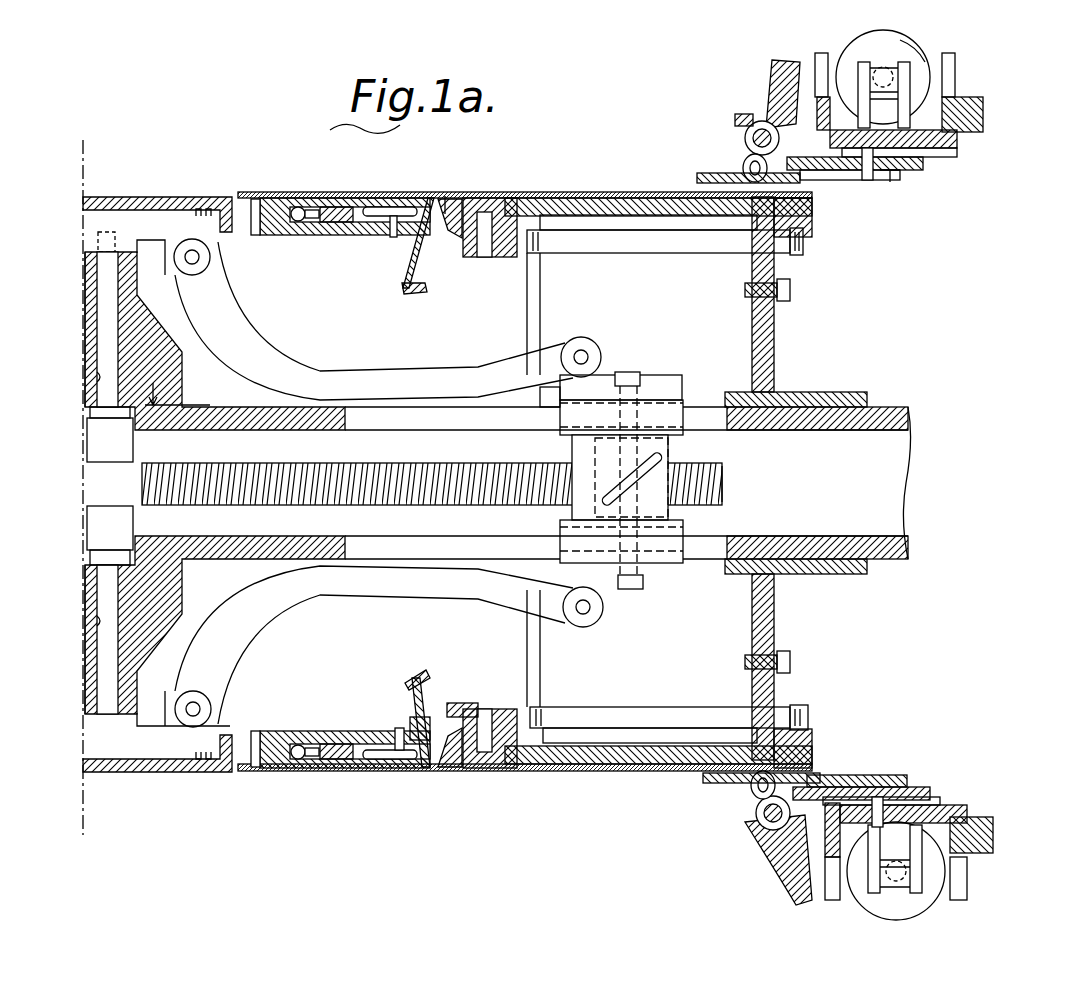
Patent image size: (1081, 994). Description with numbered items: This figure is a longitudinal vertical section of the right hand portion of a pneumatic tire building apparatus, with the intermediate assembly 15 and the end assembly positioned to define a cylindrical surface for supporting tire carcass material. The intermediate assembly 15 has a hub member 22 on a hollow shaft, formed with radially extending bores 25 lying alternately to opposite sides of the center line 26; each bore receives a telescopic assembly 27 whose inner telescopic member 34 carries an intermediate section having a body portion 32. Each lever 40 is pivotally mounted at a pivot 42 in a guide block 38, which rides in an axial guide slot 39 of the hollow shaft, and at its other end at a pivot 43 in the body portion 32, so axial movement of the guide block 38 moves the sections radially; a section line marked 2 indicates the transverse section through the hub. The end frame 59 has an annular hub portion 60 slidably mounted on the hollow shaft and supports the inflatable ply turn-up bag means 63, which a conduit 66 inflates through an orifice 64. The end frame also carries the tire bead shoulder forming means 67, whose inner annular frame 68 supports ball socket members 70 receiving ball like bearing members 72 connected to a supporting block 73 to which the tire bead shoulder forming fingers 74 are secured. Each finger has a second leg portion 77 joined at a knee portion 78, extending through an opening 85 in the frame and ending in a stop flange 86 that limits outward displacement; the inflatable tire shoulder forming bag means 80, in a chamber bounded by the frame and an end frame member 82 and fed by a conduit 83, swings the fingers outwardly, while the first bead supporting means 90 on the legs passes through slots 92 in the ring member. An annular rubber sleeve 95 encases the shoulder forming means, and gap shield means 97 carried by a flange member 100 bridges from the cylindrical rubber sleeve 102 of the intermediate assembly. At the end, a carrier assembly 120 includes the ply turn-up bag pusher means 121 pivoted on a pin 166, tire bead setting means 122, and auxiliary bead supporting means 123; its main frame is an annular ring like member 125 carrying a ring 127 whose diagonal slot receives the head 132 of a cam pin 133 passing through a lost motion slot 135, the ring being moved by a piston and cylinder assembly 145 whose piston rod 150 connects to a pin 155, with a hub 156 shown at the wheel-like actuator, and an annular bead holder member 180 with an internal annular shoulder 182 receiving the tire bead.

The section line 2 is at (177, 389).
The intermediate assembly 15 is at (191, 346).
The hub member 22 is at (85, 291).
The bores 25 is at (97, 378).
The center line 26 is at (80, 157).
The telescopic assemblies 27 is at (89, 356).
The body portion 32 is at (82, 217).
The inner telescopic member 34 is at (98, 243).
The guide block 38 is at (678, 582).
The guide slot 39 is at (728, 536).
The levers 40 is at (446, 378).
The pivot 42 is at (583, 355).
The pivot 43 is at (200, 258).
The end frame 59 is at (752, 325).
The annular hub portion 60 is at (848, 392).
The inflatable ply turn-up bag means 63 is at (605, 193).
The orifice 64 is at (510, 198).
The conduit 66 is at (642, 246).
The tire bead shoulder forming means 67 is at (376, 188).
The inner annular frame 68 is at (335, 744).
The ball socket members 70 is at (290, 207).
The ball like bearing members 72 is at (322, 210).
The supporting block 73 is at (320, 224).
The tire bead shoulder forming fingers 74 is at (398, 770).
The second leg portion 77 is at (428, 680).
The knee portion 78 is at (436, 770).
The inflatable tire shoulder forming bag means 80 is at (393, 207).
The end frame member 82 is at (348, 236).
The conduit 83 is at (390, 240).
The opening 85 is at (420, 252).
The stop flange 86 is at (408, 293).
The first or initial bead supporting means 90 is at (447, 236).
The slots 92 is at (445, 196).
The annular rubber sleeve 95 is at (413, 776).
The gap shield means 97 is at (246, 192).
The flange member 100 is at (275, 236).
The cylindrical rubber sleeve 102 is at (134, 197).
The carrier assembly 120 is at (1000, 86).
The ply turn-up bag pusher means 121 is at (788, 62).
The tire bead setting means 122 is at (917, 187).
The second or auxiliary bead supporting means 123 is at (717, 117).
The annular ring like member 125 is at (985, 110).
The ring 127 is at (958, 149).
The head 132 is at (852, 178).
The cam pin 133 is at (870, 182).
The lost motion slot 135 is at (890, 182).
The fluid pressure actuated piston and cylinder assembly 145 is at (934, 52).
The piston rod 150 is at (886, 60).
The pin 155 is at (937, 56).
The hub 156 is at (890, 477).
The pin 166 is at (745, 141).
The annular bead holder member 180 is at (742, 112).
The internal annular shoulder 182 is at (742, 136).